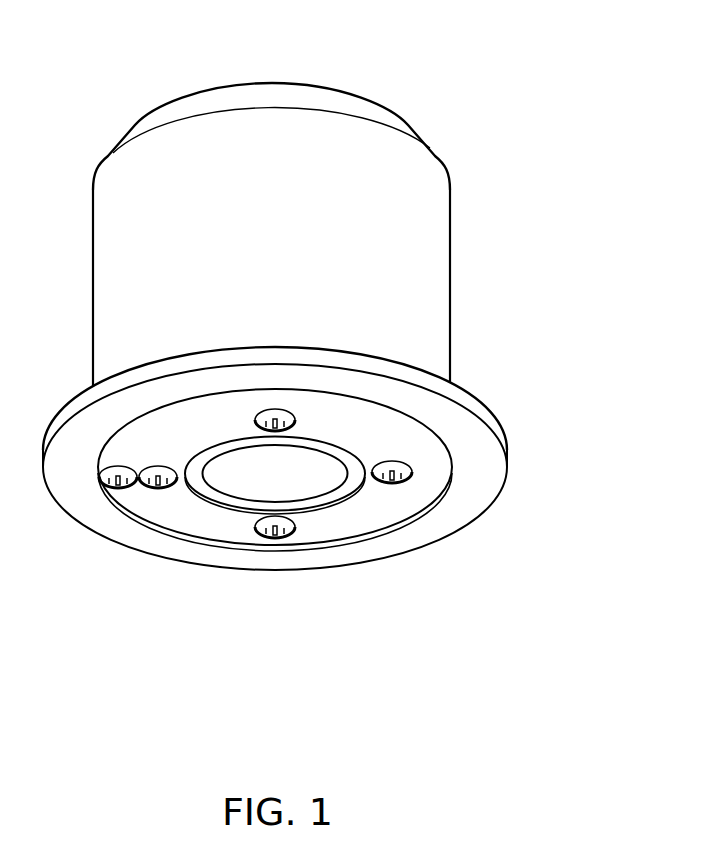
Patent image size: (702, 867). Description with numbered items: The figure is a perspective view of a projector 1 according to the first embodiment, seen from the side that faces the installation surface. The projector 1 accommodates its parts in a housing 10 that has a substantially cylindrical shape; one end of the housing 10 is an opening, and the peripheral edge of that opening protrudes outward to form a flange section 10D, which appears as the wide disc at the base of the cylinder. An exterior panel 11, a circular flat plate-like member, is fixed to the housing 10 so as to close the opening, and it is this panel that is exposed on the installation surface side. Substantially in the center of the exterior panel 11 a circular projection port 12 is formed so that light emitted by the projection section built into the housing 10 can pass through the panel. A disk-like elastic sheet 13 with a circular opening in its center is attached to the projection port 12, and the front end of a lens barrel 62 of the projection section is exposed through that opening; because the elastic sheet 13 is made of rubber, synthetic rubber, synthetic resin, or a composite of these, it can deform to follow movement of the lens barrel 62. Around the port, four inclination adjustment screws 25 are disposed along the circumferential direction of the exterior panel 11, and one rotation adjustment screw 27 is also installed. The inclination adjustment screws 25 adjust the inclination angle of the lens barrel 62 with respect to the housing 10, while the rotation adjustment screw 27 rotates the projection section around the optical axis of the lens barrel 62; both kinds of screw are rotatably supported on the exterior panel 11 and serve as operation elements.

The projector 1 is at (450, 224).
The housing 10 is at (237, 100).
The flange section 10D is at (493, 469).
The exterior panel 11 is at (237, 538).
The projection port 12 is at (318, 505).
The elastic sheet 13 is at (242, 485).
The lens barrel 62 is at (200, 487).
The inclination adjustment screw 25 is at (293, 418).
The rotation adjustment screw 27 is at (112, 486).